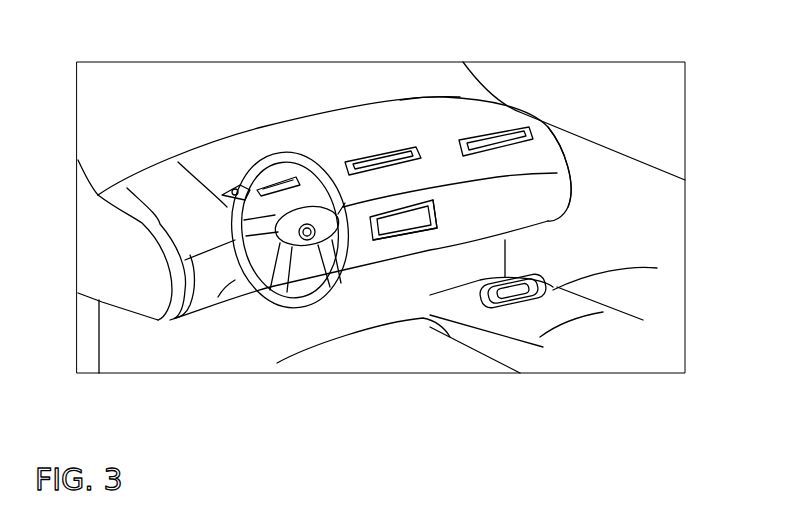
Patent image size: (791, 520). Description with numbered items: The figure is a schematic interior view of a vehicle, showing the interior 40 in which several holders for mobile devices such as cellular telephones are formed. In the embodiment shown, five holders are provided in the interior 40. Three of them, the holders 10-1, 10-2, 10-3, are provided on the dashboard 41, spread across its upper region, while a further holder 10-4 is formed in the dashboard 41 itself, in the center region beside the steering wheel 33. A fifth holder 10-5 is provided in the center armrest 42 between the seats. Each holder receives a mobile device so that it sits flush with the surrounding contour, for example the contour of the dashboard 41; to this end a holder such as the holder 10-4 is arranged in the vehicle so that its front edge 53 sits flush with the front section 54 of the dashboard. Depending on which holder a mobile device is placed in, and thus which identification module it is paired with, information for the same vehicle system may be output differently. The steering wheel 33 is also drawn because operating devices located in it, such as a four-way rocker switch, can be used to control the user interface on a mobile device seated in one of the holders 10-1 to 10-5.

The interior 40 is at (170, 122).
The dashboard 41 is at (436, 124).
The center armrest 42 is at (598, 322).
The steering wheel 33 is at (272, 288).
The front edge 53 is at (418, 250).
The front section 54 is at (558, 208).
The holder 10-1 is at (207, 156).
The holder 10-2 is at (375, 154).
The holder 10-3 is at (533, 142).
The holder 10-4 is at (376, 247).
The holder 10-5 is at (492, 293).